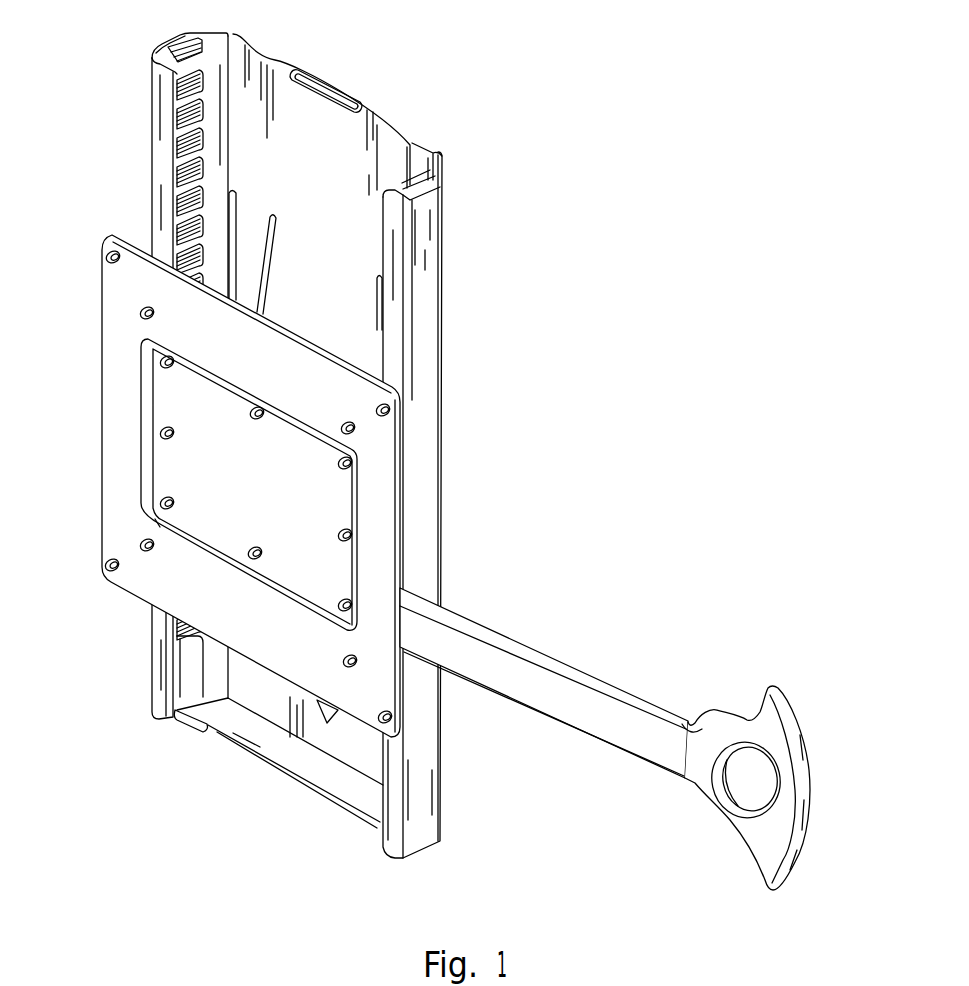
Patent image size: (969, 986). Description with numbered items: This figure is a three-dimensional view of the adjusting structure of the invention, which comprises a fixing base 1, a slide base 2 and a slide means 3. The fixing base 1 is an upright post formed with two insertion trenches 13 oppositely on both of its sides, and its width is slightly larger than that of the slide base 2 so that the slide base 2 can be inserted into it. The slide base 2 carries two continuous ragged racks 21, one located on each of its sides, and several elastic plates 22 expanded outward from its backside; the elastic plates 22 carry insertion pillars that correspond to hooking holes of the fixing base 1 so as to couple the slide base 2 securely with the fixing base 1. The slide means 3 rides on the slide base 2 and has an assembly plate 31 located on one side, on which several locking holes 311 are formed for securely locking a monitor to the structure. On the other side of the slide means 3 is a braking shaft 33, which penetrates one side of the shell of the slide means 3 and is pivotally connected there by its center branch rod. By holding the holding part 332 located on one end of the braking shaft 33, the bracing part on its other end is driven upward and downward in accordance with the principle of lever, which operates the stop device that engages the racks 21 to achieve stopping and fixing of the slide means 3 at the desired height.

The fixing base 1 is at (447, 311).
The slide base 2 is at (352, 121).
The continuous ragged racks 21 is at (200, 72).
The elastic plates 22 is at (262, 290).
The insertion trenches 13 is at (160, 50).
The slide means 3 is at (410, 395).
The assembly plate 31 is at (145, 600).
The locking holes 311 is at (110, 262).
The braking shaft 33 is at (548, 648).
The holding part 332 is at (740, 715).